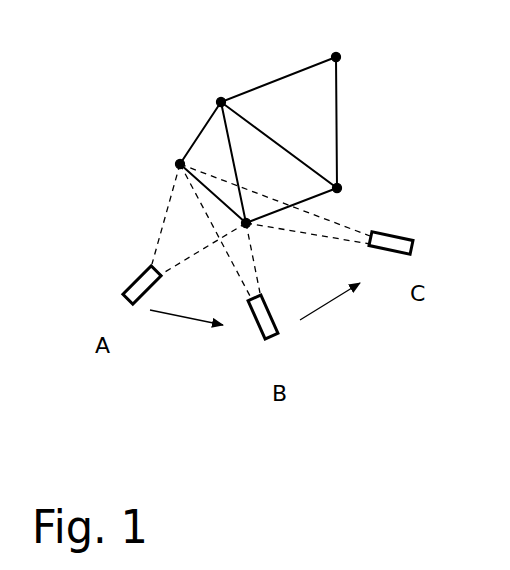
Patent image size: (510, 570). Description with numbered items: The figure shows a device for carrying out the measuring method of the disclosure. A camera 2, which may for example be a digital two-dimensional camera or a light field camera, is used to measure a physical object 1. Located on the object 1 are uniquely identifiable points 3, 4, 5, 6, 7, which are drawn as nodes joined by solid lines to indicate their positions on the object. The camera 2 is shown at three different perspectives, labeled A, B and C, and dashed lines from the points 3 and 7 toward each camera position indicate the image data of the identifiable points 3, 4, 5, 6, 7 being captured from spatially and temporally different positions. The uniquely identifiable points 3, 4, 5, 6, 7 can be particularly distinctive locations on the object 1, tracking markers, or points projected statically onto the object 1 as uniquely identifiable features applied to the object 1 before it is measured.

The physical object 1 is at (365, 122).
The camera 2 is at (137, 283).
The uniquely identifiable point 3 is at (180, 164).
The uniquely identifiable point 4 is at (221, 102).
The uniquely identifiable point 5 is at (336, 57).
The uniquely identifiable point 6 is at (341, 188).
The uniquely identifiable point 7 is at (250, 228).